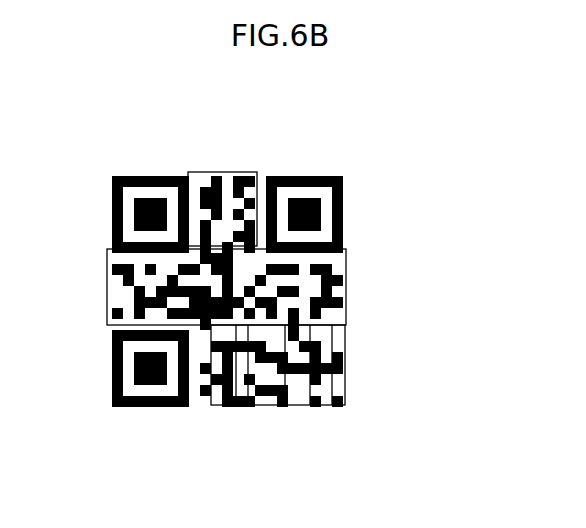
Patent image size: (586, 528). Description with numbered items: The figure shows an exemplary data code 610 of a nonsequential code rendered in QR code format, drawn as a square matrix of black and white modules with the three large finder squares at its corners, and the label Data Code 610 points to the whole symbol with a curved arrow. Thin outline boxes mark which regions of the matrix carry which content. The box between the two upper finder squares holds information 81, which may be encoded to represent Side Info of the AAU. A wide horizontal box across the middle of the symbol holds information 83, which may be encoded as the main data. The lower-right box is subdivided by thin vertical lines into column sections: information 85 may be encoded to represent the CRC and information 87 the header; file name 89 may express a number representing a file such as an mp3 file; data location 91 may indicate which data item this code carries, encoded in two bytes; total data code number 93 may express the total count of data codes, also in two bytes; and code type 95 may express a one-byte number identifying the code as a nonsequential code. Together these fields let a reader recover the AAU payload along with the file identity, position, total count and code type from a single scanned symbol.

The data code 610 is at (430, 110).
The information 81 is at (198, 206).
The information 83 is at (112, 288).
The information 85 is at (221, 404).
The information 87 is at (240, 408).
The file name 89 is at (266, 403).
The data location 91 is at (298, 405).
The total data code number 93 is at (317, 403).
The code type 95 is at (345, 365).